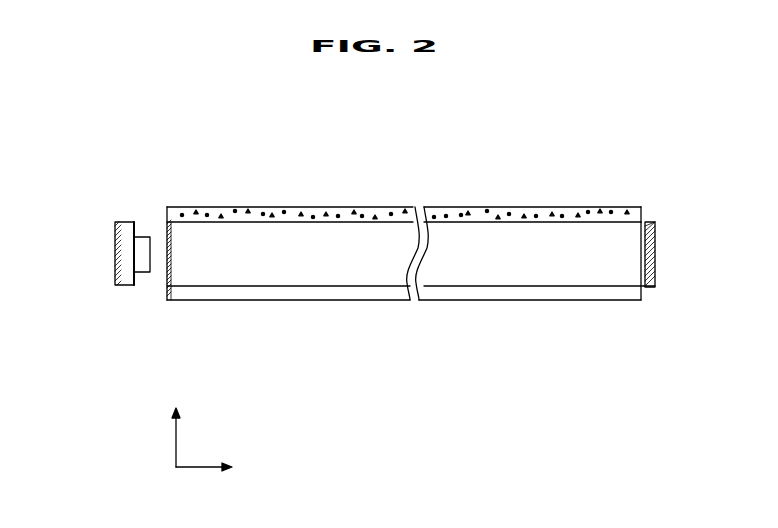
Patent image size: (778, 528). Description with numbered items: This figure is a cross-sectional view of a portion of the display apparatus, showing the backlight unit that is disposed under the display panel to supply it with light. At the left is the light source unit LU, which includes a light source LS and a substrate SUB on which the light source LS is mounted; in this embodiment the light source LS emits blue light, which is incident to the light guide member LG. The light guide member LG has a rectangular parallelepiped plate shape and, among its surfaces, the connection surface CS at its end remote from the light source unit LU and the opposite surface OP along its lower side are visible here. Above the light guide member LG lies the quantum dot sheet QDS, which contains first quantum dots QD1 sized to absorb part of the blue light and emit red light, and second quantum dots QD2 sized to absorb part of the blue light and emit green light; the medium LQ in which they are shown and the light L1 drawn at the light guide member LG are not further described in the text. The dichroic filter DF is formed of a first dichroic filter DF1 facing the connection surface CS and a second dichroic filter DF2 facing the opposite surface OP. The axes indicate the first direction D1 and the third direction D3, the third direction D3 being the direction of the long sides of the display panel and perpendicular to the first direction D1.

The light source unit LU is at (85, 243).
The light source LS is at (150, 222).
The substrate SUB is at (117, 251).
The light guide member LG is at (167, 224).
The quantum dot sheet QDS is at (404, 184).
The first quantum dots QD1 is at (497, 214).
The second quantum dots QD2 is at (446, 214).
The liquid LQ is at (568, 223).
The opposite surface OP is at (553, 286).
The first light L1 is at (170, 277).
The connection surface CS is at (642, 230).
The dichroic filter DF is at (458, 263).
The first dichroic filter DF1 is at (650, 257).
The second dichroic filter DF2 is at (632, 290).
The first direction D1 is at (177, 428).
The third direction D3 is at (217, 467).